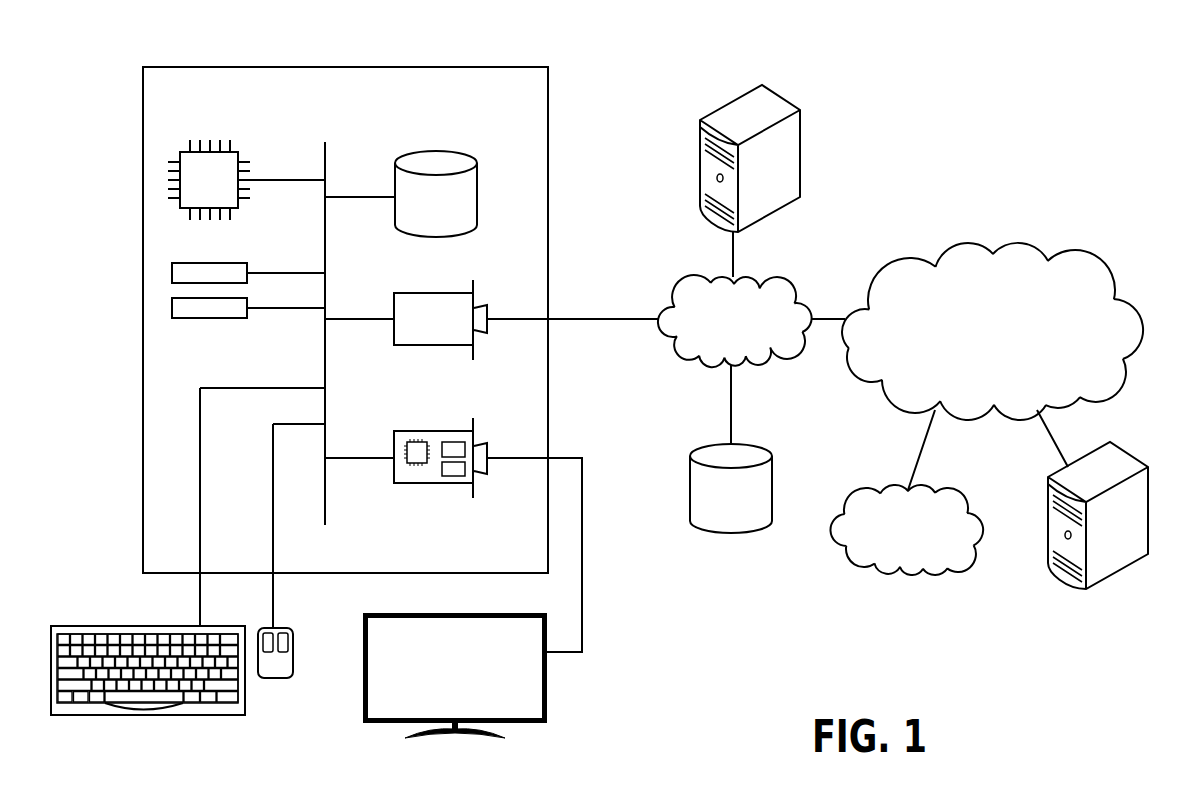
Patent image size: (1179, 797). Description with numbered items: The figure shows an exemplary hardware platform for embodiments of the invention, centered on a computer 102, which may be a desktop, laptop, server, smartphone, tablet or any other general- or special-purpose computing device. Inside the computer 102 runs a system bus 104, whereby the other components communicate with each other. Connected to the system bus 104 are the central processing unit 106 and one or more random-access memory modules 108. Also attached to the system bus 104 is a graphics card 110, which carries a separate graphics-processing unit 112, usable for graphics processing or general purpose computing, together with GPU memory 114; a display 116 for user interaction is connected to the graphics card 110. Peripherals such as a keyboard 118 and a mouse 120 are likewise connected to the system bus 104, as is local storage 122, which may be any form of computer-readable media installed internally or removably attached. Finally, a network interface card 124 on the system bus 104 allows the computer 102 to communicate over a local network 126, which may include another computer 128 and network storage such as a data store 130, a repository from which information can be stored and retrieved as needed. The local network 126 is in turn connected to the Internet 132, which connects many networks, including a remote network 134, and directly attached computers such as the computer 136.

The computer 102 is at (502, 67).
The system bus 104 is at (326, 150).
The central processing unit 106 is at (232, 146).
The random-access memory modules 108 is at (247, 303).
The graphics card 110 is at (467, 519).
The graphics-processing unit 112 is at (415, 463).
The GPU memory 114 is at (452, 476).
The display 116 is at (547, 703).
The keyboard 118 is at (150, 716).
The mouse 120 is at (274, 678).
The local storage 122 is at (478, 180).
The network interface card 124 is at (394, 303).
The local network 126 is at (787, 280).
The computer 128 is at (787, 100).
The data store 130 is at (763, 446).
The Internet 132 is at (1036, 245).
The remote network 134 is at (960, 488).
The computer 136 is at (1118, 452).